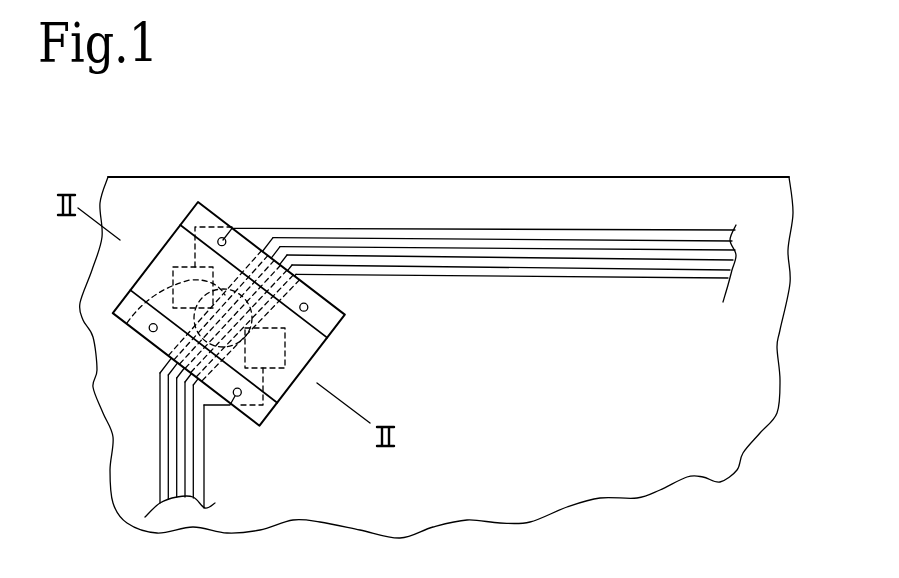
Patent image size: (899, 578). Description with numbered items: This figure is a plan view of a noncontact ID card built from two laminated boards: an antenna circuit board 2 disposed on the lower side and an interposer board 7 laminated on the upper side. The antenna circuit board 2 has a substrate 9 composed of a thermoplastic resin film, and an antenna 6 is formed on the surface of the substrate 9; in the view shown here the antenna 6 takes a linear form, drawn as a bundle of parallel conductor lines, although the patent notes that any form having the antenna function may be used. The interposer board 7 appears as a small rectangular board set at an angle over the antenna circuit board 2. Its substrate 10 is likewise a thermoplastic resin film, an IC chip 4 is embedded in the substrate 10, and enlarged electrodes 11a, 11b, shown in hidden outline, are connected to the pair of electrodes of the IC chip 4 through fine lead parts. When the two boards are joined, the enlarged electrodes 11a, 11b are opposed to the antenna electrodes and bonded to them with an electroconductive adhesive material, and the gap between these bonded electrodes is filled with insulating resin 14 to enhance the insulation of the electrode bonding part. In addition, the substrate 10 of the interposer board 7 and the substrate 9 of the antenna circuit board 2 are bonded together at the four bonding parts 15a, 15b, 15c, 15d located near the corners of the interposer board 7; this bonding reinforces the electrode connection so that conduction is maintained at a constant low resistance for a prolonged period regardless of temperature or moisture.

The antenna circuit board 2 is at (588, 176).
The IC chip 4 is at (280, 228).
The antenna 6 is at (594, 272).
The interposer board 7 is at (156, 356).
The substrate 9 is at (175, 188).
The substrate 10 is at (150, 270).
The enlarged electrode 11a is at (127, 323).
The enlarged electrode 11b is at (276, 370).
The insulating resin 14 is at (235, 292).
The bonding part 15a is at (150, 331).
The bonding part 15b is at (236, 398).
The bonding part 15c is at (307, 305).
The bonding part 15d is at (224, 238).